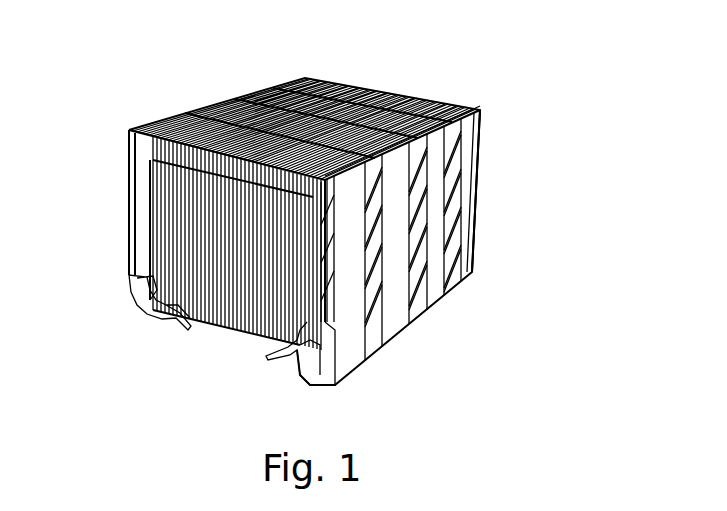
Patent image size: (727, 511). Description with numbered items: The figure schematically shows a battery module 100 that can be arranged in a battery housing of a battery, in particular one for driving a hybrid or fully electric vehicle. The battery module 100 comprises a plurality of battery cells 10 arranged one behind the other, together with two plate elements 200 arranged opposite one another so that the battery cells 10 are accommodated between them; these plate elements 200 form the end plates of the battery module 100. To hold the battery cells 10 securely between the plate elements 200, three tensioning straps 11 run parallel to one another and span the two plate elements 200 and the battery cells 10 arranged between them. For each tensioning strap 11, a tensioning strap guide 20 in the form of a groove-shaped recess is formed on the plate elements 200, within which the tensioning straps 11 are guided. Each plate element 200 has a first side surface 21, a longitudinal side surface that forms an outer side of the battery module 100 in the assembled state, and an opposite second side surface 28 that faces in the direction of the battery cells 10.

The battery module 100 is at (136, 119).
The battery cells 10 is at (406, 96).
The tensioning straps 11 is at (448, 98).
The tensioning strap guide 20 is at (481, 139).
The first side surface 21 is at (470, 244).
The second side surface 28 is at (144, 232).
The plate elements 200 is at (474, 187).